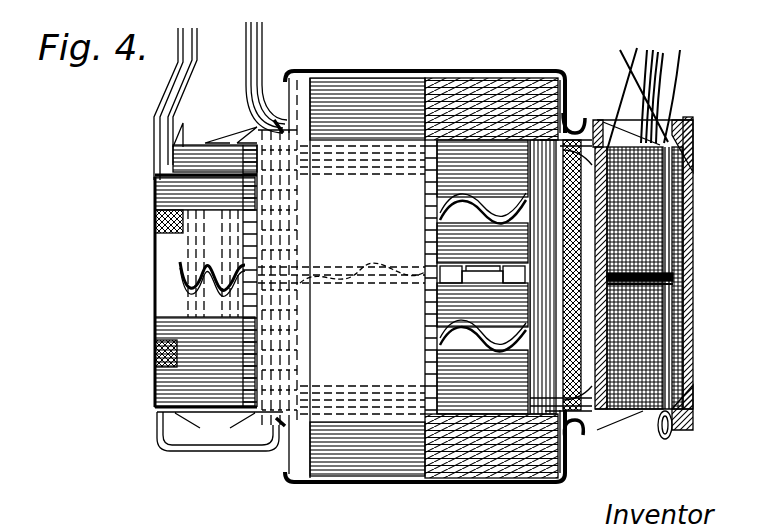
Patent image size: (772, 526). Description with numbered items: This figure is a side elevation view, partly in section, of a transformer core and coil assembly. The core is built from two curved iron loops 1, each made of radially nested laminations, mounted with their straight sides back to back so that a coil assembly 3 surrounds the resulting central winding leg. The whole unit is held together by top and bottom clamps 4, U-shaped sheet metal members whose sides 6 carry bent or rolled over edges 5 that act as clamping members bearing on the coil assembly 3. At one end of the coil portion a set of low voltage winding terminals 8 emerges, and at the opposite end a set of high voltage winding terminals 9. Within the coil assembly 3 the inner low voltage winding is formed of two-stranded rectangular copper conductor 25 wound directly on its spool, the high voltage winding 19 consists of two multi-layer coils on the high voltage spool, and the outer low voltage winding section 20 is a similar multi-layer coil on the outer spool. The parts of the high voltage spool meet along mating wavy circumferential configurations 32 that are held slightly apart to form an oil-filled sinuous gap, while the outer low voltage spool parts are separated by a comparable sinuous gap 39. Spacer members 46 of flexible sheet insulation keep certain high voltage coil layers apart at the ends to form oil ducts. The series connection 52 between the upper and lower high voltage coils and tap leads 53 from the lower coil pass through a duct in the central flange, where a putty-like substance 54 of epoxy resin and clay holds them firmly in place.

The core loop 1 is at (380, 95).
The coil assembly 3 is at (170, 299).
The clamp 4 is at (462, 72).
The rolled over edge 5 is at (276, 112).
The side 6 is at (287, 74).
The low voltage winding terminal 8 is at (243, 30).
The high voltage winding terminal 9 is at (655, 46).
The high voltage winding 19 is at (612, 130).
The outer low voltage winding section 20 is at (693, 195).
The rectangular copper conductor 25 is at (264, 24).
The wavy circumferential configuration 32 is at (440, 217).
The sinuous gap 39 is at (180, 262).
The spacer member 46 is at (650, 426).
The connection 52 is at (673, 273).
The tap lead 53 is at (657, 283).
The putty-like substance 54 is at (640, 268).